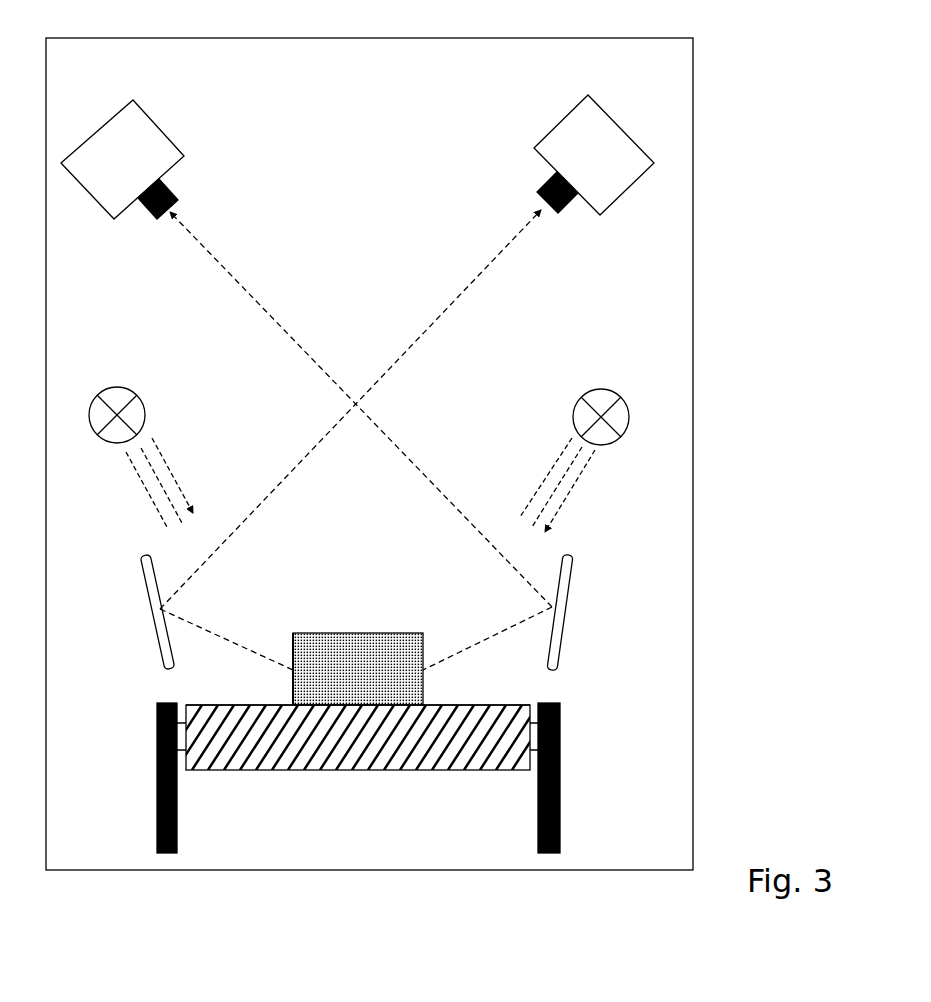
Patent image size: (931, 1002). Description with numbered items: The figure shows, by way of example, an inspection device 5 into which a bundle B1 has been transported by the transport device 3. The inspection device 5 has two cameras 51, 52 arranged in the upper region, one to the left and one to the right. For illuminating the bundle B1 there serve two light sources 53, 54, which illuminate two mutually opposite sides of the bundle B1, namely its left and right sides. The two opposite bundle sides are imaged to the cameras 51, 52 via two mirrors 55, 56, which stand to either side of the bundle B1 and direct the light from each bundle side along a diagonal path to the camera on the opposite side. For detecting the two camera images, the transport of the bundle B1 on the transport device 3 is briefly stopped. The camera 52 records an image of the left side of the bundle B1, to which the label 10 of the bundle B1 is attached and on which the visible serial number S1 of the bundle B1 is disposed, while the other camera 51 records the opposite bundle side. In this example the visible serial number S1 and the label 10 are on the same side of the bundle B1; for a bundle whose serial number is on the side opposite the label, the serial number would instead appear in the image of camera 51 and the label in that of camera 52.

The inspection device 5 is at (223, 37).
The camera 51 is at (112, 122).
The camera 52 is at (568, 122).
The light source 53 is at (107, 390).
The light source 54 is at (591, 389).
The mirror 55 is at (146, 575).
The mirror 56 is at (572, 590).
The bundle B1 is at (370, 633).
The visible serial number S1 is at (288, 644).
The label 10 is at (288, 677).
The transport device 3 is at (340, 771).